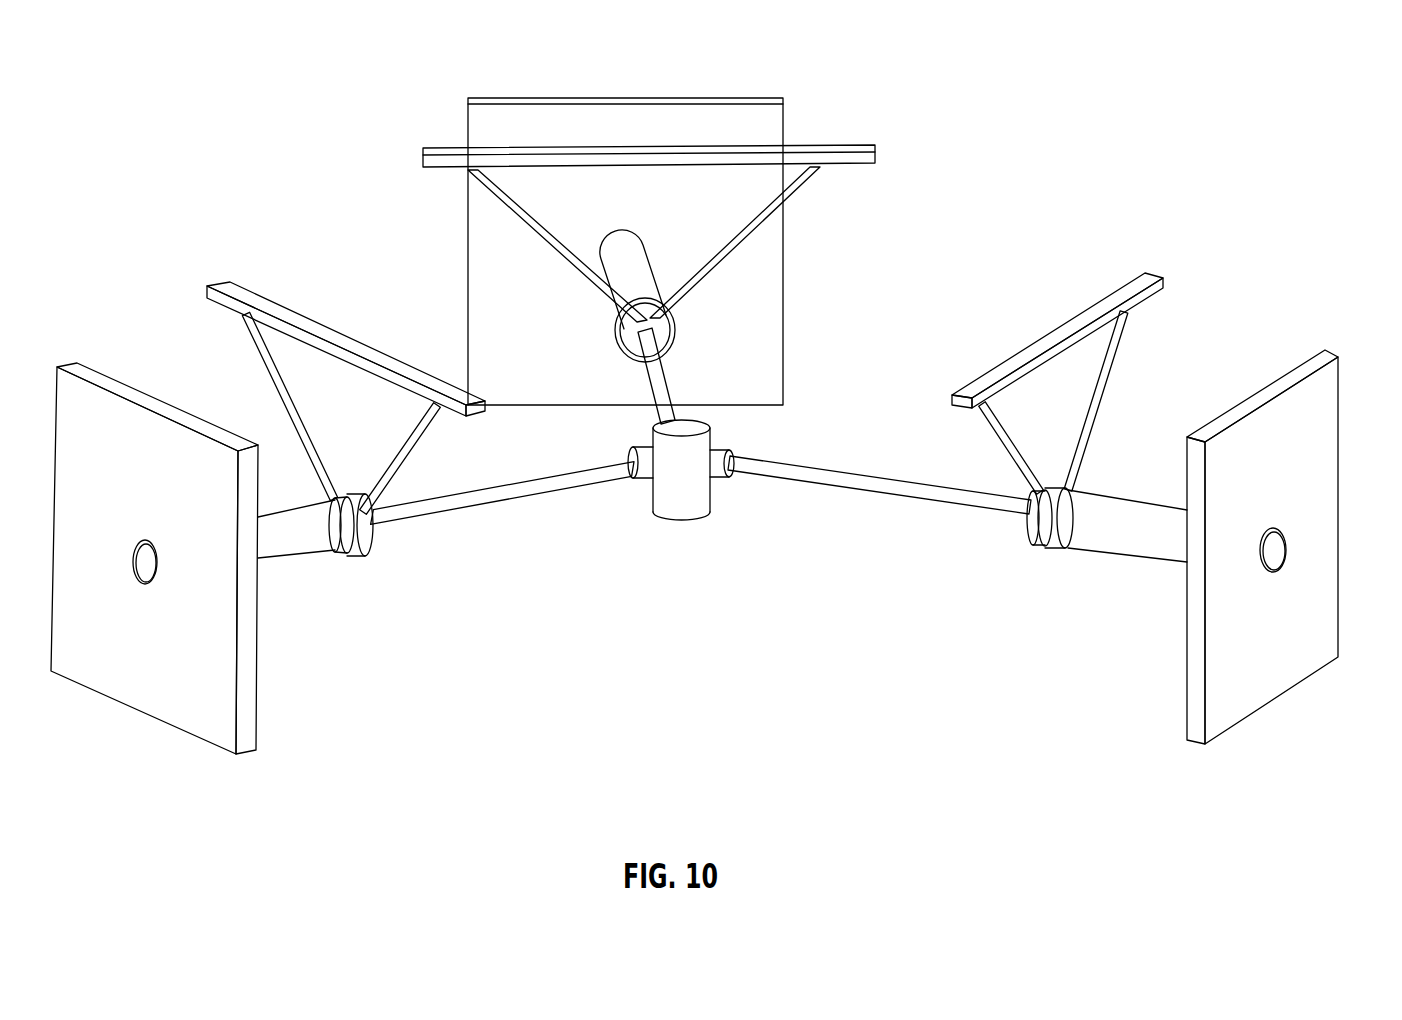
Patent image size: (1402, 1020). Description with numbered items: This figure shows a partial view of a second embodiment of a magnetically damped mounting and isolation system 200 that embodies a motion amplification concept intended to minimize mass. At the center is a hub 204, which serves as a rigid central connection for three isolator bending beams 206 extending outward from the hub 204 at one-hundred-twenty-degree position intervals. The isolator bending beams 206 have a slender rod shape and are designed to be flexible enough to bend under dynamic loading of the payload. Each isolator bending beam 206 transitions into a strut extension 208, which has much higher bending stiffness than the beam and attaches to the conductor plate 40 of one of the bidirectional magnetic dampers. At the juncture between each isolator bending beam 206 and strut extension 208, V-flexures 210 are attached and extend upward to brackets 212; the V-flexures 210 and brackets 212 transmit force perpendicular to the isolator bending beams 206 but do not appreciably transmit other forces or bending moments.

The magnetically damped mounting and isolation system 200 is at (1005, 102).
The conductor plate 40 is at (795, 86).
The hub 204 is at (683, 510).
The isolator bending beam 206 is at (658, 373).
The strut extension 208 is at (630, 248).
The V-flexure 210 is at (790, 190).
The bracket 212 is at (435, 150).